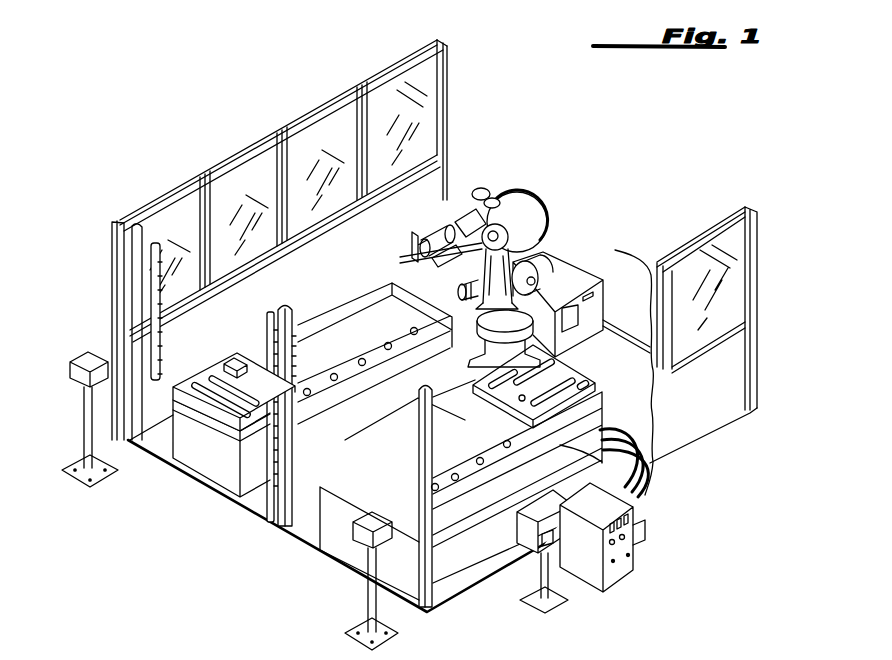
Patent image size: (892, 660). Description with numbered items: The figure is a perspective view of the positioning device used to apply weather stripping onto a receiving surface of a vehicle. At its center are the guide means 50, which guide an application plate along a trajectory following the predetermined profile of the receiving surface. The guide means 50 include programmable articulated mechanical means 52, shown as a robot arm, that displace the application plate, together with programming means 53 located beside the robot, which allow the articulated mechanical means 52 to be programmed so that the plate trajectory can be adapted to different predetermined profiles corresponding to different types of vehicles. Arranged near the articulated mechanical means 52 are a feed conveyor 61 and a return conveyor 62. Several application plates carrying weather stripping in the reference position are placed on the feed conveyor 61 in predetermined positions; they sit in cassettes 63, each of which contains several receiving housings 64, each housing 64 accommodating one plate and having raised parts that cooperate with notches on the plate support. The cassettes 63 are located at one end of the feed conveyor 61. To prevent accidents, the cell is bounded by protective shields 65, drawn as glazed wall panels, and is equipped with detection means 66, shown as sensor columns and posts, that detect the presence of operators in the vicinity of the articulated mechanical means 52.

The guide means 50 is at (476, 163).
The programmable articulated mechanical means 52 is at (543, 220).
The programming means 53 is at (573, 277).
The feed conveyor 61 is at (645, 493).
The return conveyor 62 is at (200, 458).
The cassette 63 is at (204, 375).
The receiving housing 64 is at (233, 362).
The protective shield 65 is at (317, 133).
The operator presence detection means 66 is at (142, 314).